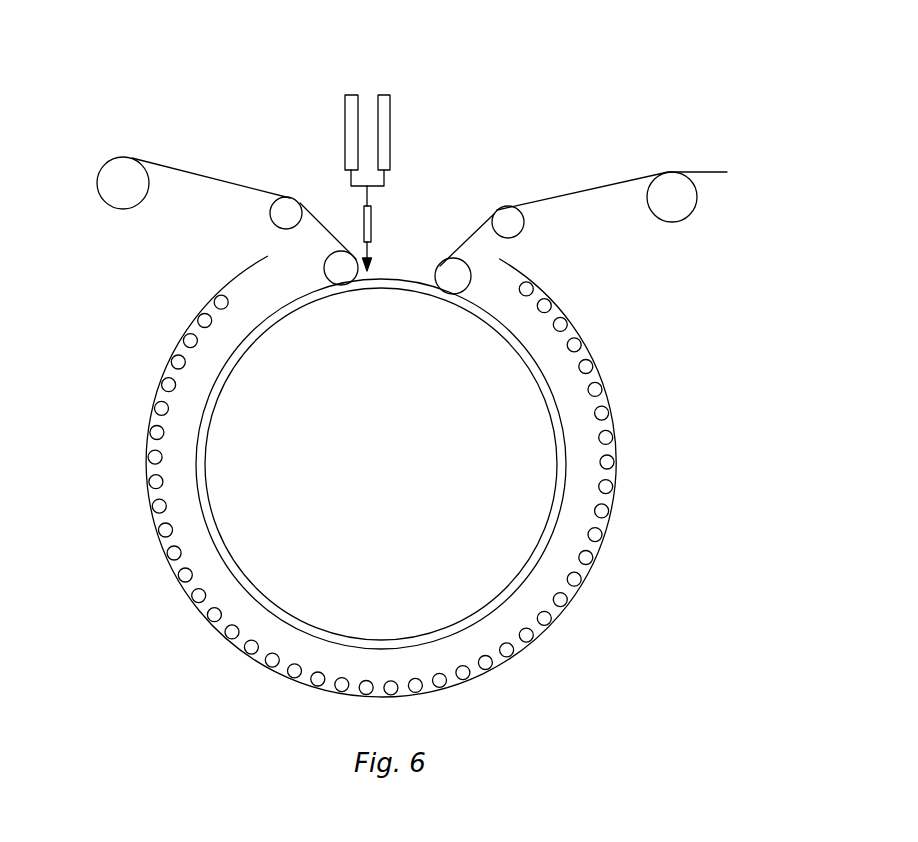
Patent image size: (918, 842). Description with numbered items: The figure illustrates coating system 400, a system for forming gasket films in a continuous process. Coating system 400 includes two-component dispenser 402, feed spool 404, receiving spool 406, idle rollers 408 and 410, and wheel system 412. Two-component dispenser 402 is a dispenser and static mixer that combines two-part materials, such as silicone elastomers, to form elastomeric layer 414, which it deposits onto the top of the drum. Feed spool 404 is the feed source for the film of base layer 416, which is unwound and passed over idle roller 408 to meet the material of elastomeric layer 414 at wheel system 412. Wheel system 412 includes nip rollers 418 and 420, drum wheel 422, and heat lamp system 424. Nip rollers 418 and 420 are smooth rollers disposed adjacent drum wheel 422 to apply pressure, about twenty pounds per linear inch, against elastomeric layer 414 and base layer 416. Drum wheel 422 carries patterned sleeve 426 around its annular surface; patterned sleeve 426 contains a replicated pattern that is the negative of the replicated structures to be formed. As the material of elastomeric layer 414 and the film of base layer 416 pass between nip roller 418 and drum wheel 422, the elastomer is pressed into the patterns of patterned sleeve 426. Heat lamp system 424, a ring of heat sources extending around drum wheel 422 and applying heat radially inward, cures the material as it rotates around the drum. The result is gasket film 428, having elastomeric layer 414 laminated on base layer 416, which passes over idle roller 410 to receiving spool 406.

The coating system 400 is at (525, 64).
The two-component dispenser 402 is at (398, 174).
The feed spool 404 is at (112, 193).
The receiving spool 406 is at (682, 207).
The idle roller 408 is at (277, 210).
The idle roller 410 is at (518, 217).
The wheel system 412 is at (424, 476).
The elastomeric layer 414 is at (372, 252).
The base layer 416 is at (326, 226).
The nip roller 418 is at (328, 260).
The nip roller 420 is at (467, 268).
The drum wheel 422 is at (363, 432).
The heat lamp system 424 is at (138, 457).
The patterned sleeve 426 is at (205, 403).
The gasket film 428 is at (609, 168).